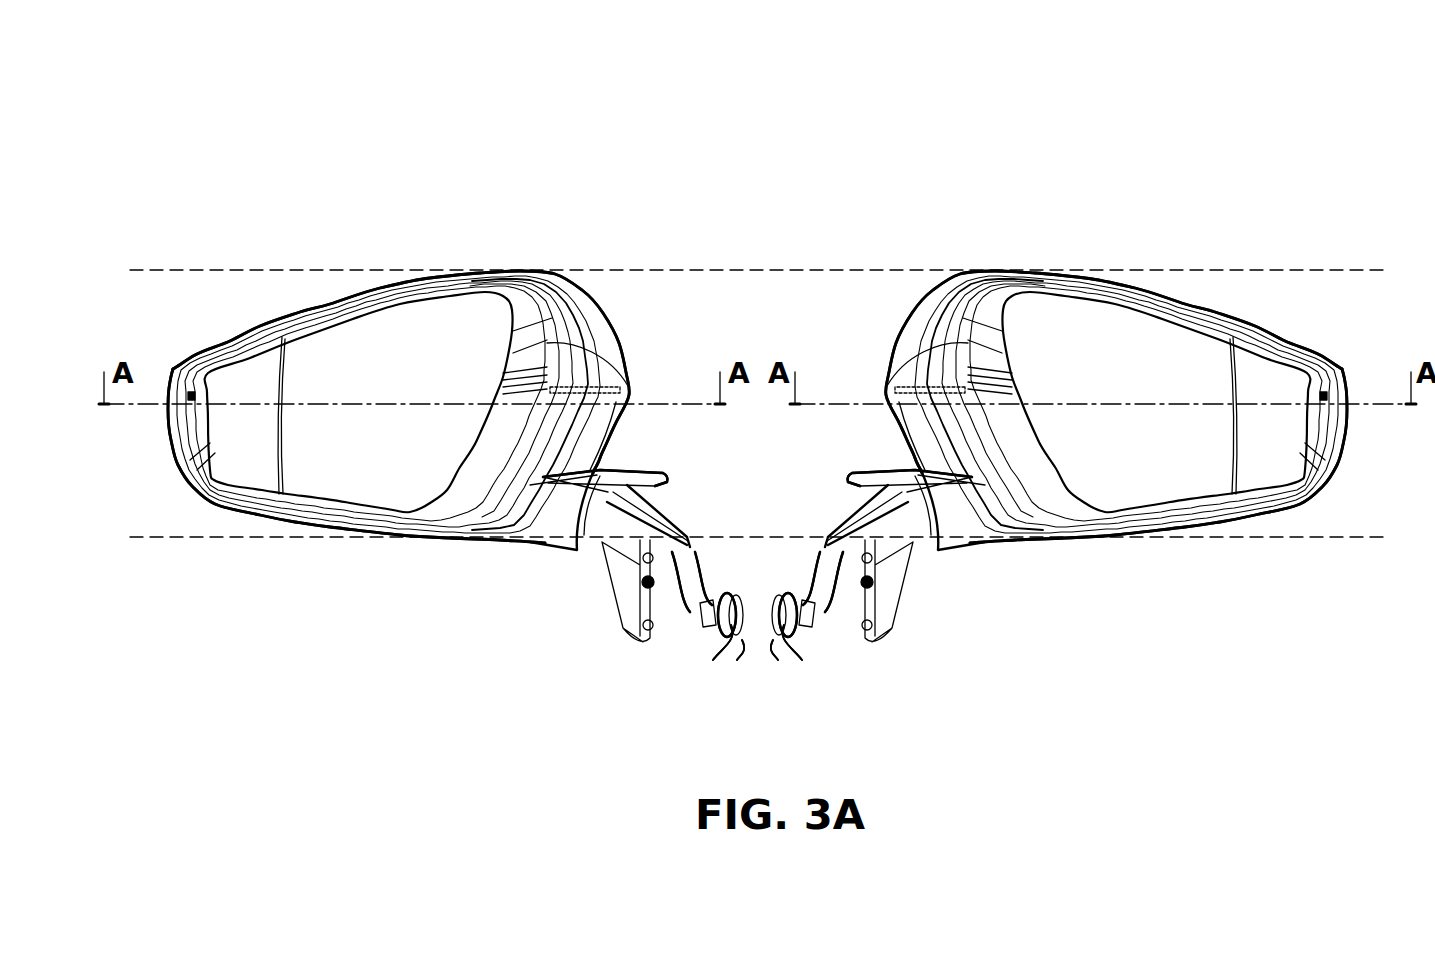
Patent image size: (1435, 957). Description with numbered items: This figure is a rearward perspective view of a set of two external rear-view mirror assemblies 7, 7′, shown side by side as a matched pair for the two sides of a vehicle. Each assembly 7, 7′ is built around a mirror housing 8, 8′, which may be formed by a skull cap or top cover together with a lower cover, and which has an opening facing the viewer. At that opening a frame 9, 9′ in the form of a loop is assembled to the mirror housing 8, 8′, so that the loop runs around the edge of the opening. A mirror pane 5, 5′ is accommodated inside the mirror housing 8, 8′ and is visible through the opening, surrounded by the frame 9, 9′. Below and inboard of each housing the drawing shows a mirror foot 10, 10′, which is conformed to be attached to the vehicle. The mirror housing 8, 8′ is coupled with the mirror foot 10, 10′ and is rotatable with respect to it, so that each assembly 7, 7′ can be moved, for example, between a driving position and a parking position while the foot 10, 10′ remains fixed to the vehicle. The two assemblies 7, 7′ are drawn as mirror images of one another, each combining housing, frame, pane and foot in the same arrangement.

The external rear-view mirror assembly 7 is at (225, 205).
The external rear-view mirror assembly 7′ is at (1225, 205).
The mirror pane 5 is at (380, 360).
The mirror pane 5′ is at (1203, 368).
The mirror housing 8 is at (589, 300).
The mirror housing 8′ is at (925, 320).
The frame 9 is at (525, 315).
The frame 9′ is at (990, 310).
The mirror foot 10 is at (562, 517).
The mirror foot 10′ is at (953, 513).